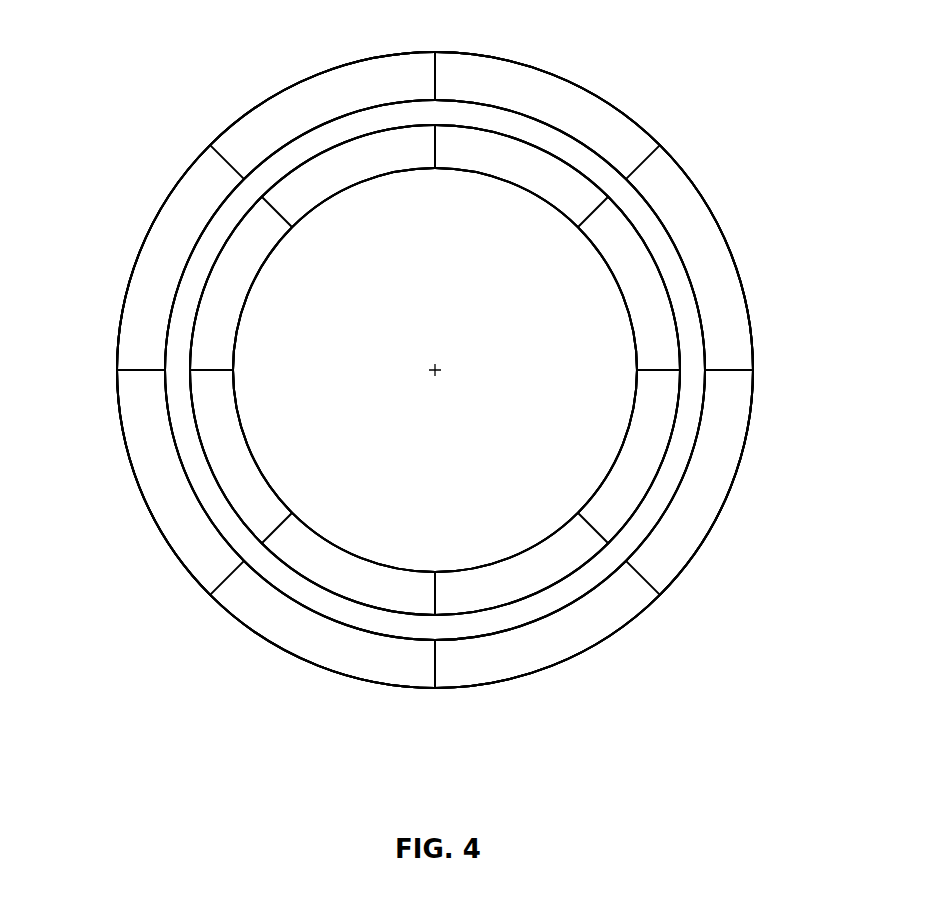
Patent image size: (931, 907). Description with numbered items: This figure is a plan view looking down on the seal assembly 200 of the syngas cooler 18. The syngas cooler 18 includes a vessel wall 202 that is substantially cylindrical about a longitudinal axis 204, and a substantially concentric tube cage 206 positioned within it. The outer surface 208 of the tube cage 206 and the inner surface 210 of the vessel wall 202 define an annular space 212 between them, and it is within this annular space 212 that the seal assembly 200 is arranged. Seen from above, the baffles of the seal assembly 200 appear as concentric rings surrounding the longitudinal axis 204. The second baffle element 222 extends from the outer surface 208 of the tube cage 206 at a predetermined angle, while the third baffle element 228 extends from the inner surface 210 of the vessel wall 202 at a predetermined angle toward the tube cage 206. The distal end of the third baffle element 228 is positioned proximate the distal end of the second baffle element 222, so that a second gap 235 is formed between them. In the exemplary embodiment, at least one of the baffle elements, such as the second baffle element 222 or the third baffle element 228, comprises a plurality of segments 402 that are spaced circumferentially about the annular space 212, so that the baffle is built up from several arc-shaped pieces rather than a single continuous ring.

The syngas cooler 18 is at (242, 84).
The seal assembly 200 is at (612, 74).
The vessel wall 202 is at (672, 151).
The longitudinal axis 204 is at (436, 362).
The tube cage 206 is at (368, 558).
The outer surface 208 is at (538, 546).
The inner surface 210 is at (570, 663).
The annular space 212 is at (680, 442).
The second baffle element 222 is at (610, 245).
The third baffle element 228 is at (733, 318).
The second gap 235 is at (670, 259).
The segments 402 is at (245, 129).